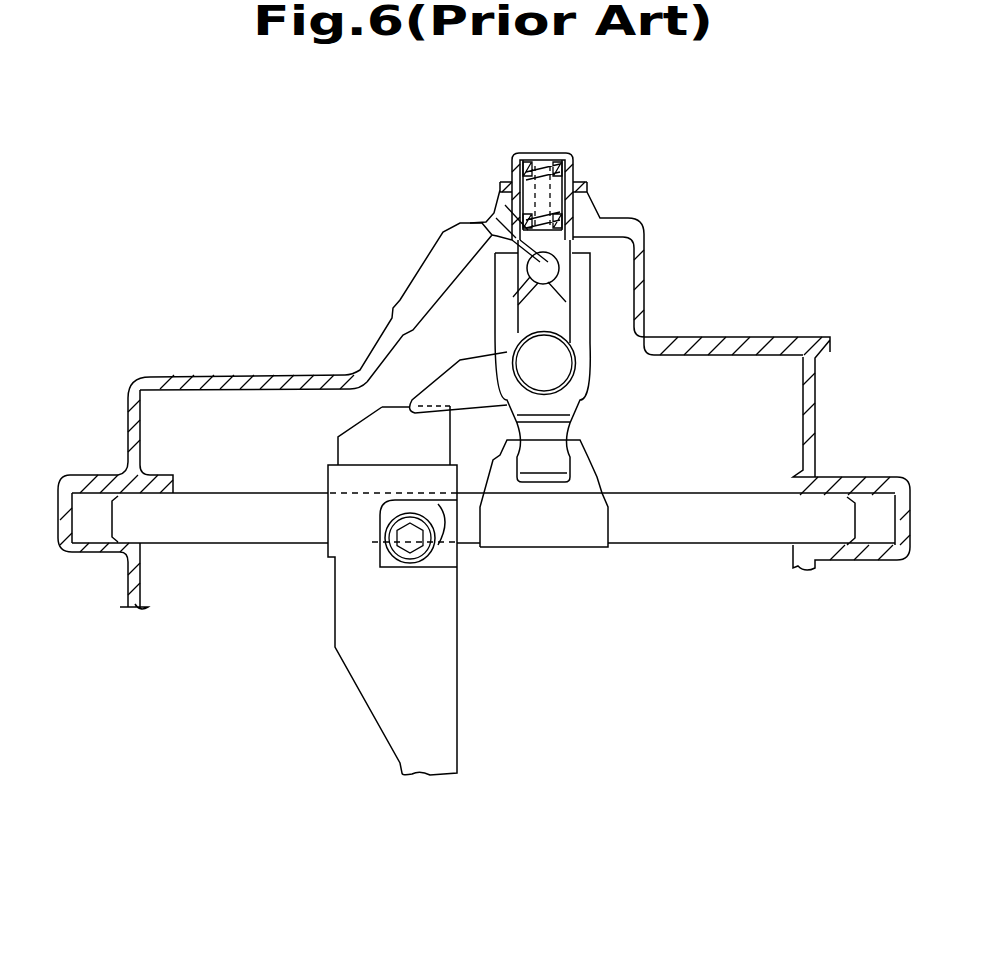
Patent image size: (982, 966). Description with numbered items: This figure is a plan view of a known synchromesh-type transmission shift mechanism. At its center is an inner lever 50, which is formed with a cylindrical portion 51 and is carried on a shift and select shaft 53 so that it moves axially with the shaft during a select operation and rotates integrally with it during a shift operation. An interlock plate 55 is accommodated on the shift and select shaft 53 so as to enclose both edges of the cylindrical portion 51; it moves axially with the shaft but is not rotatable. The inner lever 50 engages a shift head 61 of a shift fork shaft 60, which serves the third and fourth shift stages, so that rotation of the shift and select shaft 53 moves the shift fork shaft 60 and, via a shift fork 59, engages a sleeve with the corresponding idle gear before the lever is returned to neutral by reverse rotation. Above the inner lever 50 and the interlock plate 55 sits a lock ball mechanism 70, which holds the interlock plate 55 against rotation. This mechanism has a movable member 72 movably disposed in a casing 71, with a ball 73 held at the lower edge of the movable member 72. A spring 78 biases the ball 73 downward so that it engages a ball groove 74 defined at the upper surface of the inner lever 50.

The inner lever 50 is at (574, 322).
The cylindrical portion 51 is at (508, 340).
The shift and select shaft 53 is at (560, 373).
The interlock plate 55 is at (483, 292).
The shift fork 59 is at (442, 670).
The shift fork shaft 60 is at (673, 533).
The shift head 61 is at (588, 472).
The lock ball mechanism 70 is at (603, 176).
The casing 71 is at (642, 263).
The movable member 72 is at (520, 237).
The ball 73 is at (553, 263).
The ball groove 74 is at (523, 285).
The spring 78 is at (542, 153).